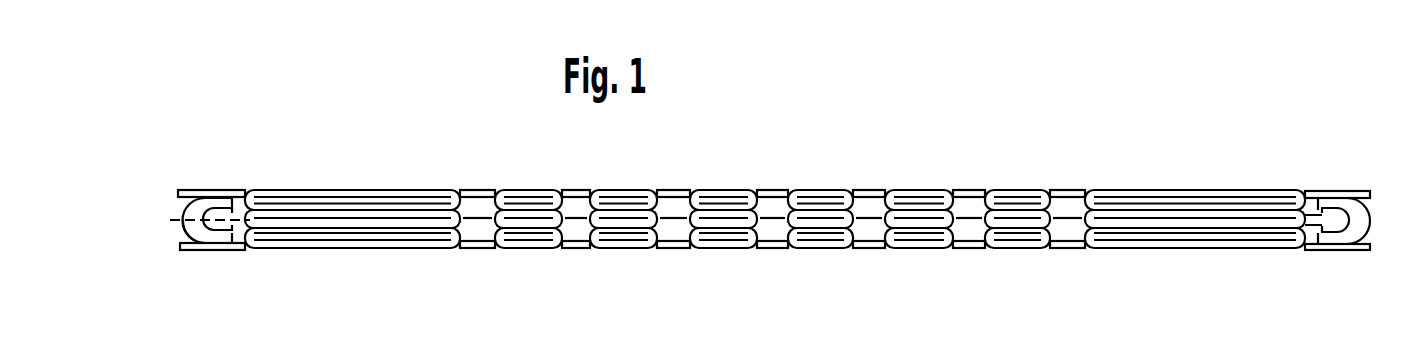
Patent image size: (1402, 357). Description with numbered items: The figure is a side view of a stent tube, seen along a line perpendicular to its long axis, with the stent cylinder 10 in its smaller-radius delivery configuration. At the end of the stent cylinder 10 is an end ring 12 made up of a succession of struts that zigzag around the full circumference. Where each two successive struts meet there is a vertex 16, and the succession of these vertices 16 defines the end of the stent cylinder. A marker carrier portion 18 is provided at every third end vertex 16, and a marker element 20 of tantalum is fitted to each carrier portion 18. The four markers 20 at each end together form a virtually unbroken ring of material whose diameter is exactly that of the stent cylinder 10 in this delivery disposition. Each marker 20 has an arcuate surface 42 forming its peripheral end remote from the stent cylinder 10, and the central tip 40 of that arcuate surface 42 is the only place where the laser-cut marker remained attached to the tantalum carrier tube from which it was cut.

The stent cylinder 10 is at (882, 168).
The end ring 12 is at (468, 170).
The vertex 16 is at (245, 192).
The marker carrier portion 18 is at (220, 231).
The marker element 20 is at (198, 231).
The central tip 40 is at (173, 218).
The arcuate surface 42 is at (177, 229).